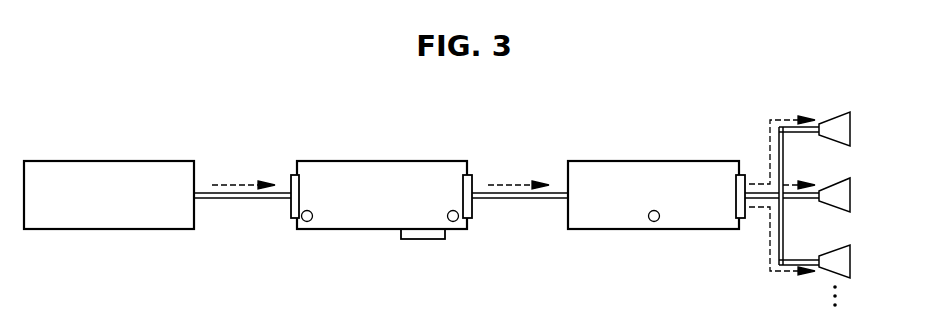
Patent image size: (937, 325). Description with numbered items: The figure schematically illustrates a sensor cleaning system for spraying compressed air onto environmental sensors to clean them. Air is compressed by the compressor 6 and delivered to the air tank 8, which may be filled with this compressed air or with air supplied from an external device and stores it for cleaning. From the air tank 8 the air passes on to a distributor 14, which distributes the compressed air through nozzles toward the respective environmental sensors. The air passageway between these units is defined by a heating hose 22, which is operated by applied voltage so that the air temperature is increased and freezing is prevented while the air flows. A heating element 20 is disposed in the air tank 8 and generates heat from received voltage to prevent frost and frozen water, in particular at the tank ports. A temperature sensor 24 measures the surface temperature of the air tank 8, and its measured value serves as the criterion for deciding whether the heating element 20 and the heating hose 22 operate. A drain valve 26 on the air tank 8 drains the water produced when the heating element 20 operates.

The compressor 6 is at (88, 161).
The air tank 8 is at (351, 161).
The distributor 14 is at (598, 161).
The heating element 20 is at (293, 207).
The heating hose 22 is at (200, 191).
The temperature sensor 24 is at (308, 222).
The drain valve 26 is at (415, 240).